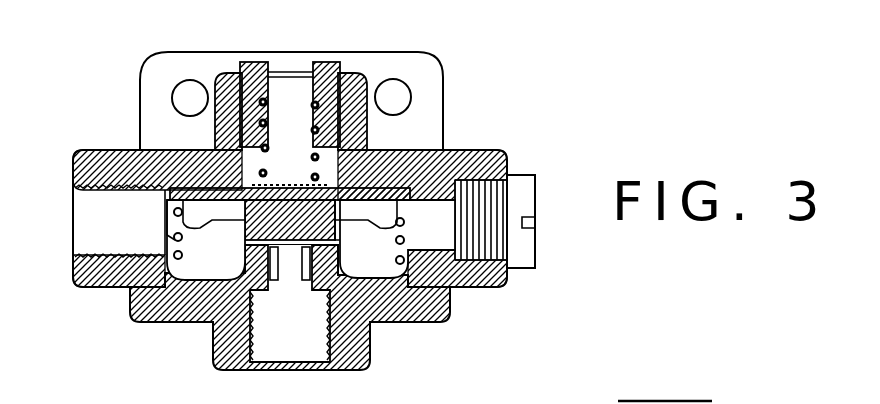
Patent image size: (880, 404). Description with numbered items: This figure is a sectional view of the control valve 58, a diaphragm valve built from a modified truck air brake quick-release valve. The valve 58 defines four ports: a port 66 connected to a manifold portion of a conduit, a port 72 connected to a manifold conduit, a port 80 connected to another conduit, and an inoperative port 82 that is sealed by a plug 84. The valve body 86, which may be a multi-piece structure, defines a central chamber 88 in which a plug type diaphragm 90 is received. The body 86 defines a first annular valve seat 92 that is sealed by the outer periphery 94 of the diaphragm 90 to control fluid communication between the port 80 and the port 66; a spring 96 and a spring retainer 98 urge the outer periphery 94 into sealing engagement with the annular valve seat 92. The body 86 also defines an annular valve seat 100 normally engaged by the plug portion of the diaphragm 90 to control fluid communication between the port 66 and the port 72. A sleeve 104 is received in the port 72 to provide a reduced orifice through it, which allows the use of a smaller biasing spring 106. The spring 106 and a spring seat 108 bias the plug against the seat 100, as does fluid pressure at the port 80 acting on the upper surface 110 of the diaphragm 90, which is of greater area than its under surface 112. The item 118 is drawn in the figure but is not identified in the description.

The control valve 58 is at (478, 98).
The port 66 is at (103, 228).
The port 72 is at (296, 345).
The port 80 is at (291, 79).
The inoperative port 82 is at (466, 172).
The plug 84 is at (500, 222).
The body 86 is at (395, 305).
The central chamber 88 is at (408, 152).
The diaphragm 90 is at (290, 212).
The first annular valve seat 92 is at (138, 173).
The outer periphery 94 is at (400, 196).
The spring 96 is at (203, 280).
The spring retainer 98 is at (178, 210).
The annular valve seat 100 is at (244, 226).
The sleeve 104 is at (287, 258).
The spring 106 is at (300, 95).
The spring seat 108 is at (241, 63).
The upper surface 110 is at (213, 190).
The under surface 112 is at (367, 226).
The bracket 118 is at (690, 400).